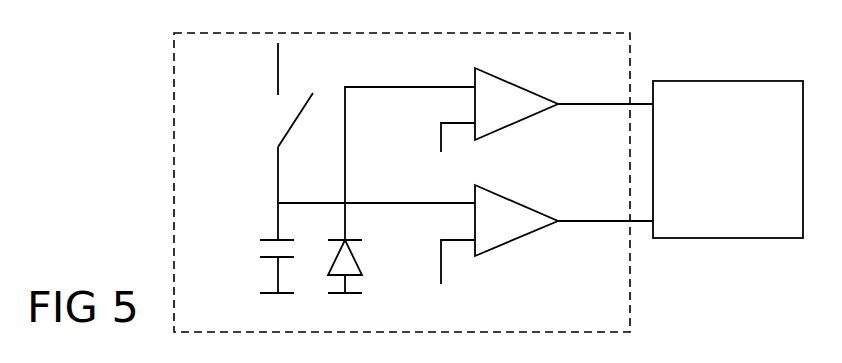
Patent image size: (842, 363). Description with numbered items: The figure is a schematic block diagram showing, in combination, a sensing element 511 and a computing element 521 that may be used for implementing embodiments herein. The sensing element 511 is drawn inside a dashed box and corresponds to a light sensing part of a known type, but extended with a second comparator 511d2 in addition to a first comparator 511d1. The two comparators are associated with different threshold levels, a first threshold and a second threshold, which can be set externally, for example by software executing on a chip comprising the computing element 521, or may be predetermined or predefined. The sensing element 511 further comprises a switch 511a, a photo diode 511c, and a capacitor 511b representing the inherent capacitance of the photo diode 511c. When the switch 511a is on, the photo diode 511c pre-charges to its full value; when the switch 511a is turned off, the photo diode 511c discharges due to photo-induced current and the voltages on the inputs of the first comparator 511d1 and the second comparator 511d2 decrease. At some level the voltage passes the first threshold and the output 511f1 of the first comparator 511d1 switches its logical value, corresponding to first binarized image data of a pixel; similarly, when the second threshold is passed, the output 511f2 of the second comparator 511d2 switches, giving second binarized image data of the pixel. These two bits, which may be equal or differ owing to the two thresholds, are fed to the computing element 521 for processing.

The sensing element 511 is at (630, 309).
The switch 511a is at (286, 132).
The capacitor 511b is at (278, 240).
The photo diode 511c is at (355, 259).
The first comparator 511d1 is at (483, 254).
The second comparator 511d2 is at (480, 138).
The output of the first comparator 511f1 is at (578, 221).
The output of the second comparator 511f2 is at (595, 72).
The computing element 521 is at (728, 159).